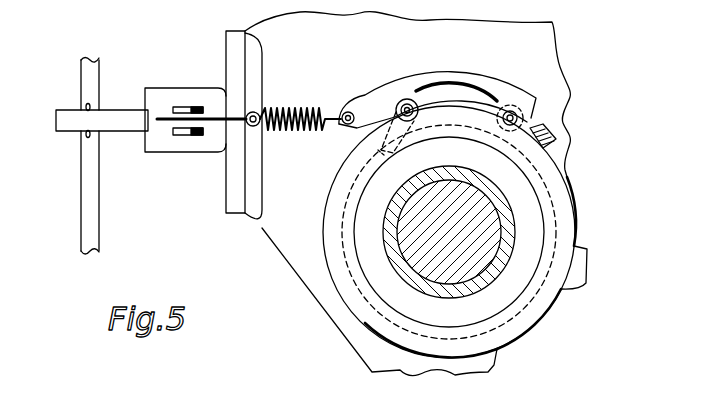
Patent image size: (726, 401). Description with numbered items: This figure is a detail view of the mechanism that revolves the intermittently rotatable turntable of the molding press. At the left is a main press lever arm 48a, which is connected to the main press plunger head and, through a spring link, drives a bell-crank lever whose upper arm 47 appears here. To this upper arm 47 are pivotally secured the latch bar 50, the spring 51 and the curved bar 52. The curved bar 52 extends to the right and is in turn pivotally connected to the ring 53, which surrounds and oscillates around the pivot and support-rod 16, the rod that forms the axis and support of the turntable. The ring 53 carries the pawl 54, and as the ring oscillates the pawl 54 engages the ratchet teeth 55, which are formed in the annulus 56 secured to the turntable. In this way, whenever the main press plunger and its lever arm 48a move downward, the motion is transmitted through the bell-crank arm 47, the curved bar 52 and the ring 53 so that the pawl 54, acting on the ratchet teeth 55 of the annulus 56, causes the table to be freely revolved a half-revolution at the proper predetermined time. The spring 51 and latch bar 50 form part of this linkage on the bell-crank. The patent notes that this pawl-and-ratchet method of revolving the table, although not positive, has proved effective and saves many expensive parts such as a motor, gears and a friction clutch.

The pivot and support-rod 16 is at (425, 245).
The upper arm of the bell-crank lever 47 is at (173, 114).
The main press lever arm 48a is at (88, 187).
The latch bar 50 is at (111, 118).
The spring 51 is at (318, 129).
The curved bar 52 is at (480, 82).
The ring 53 is at (558, 192).
The pawl 54 is at (393, 106).
The ratchet teeth 55 is at (378, 153).
The annulus 56 is at (527, 233).